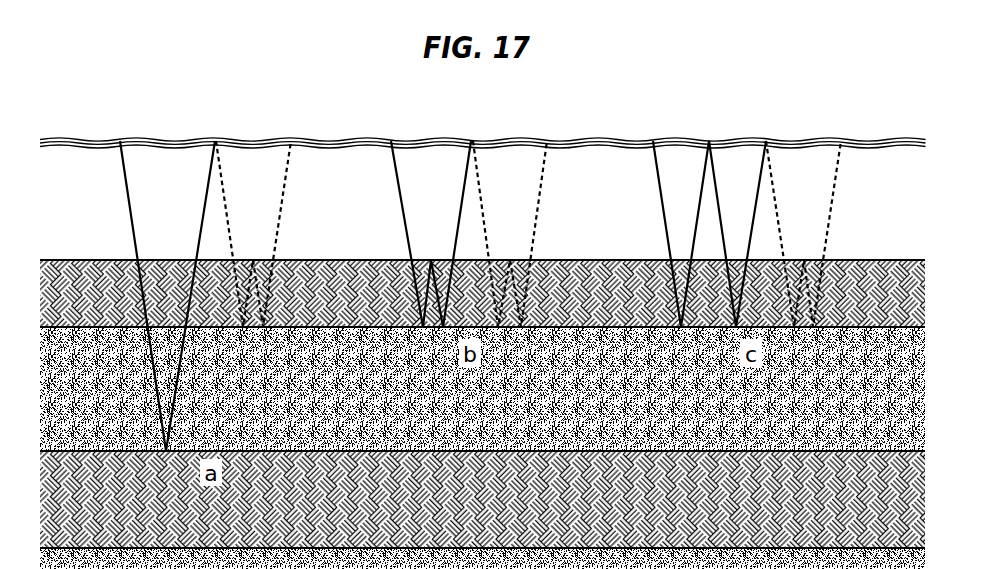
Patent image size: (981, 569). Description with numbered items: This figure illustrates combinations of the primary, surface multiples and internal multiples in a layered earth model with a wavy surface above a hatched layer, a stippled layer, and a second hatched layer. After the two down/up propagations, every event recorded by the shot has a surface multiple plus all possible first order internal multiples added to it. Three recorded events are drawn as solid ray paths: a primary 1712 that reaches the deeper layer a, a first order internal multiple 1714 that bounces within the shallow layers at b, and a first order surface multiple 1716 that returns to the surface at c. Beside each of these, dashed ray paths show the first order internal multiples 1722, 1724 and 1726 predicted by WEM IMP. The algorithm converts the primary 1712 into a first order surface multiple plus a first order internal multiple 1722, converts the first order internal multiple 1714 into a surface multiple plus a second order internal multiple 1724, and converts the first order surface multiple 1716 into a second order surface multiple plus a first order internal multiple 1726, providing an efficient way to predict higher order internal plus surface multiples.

The primary 1712 is at (130, 170).
The first order internal multiple 1722 is at (268, 170).
The first order internal multiple 1714 is at (400, 170).
The first order internal multiple 1724 is at (526, 170).
The first order surface multiple 1716 is at (662, 170).
The first order internal multiple 1726 is at (816, 170).